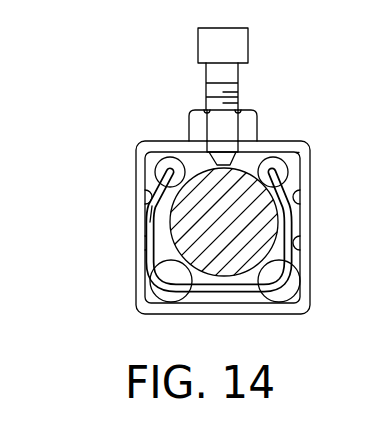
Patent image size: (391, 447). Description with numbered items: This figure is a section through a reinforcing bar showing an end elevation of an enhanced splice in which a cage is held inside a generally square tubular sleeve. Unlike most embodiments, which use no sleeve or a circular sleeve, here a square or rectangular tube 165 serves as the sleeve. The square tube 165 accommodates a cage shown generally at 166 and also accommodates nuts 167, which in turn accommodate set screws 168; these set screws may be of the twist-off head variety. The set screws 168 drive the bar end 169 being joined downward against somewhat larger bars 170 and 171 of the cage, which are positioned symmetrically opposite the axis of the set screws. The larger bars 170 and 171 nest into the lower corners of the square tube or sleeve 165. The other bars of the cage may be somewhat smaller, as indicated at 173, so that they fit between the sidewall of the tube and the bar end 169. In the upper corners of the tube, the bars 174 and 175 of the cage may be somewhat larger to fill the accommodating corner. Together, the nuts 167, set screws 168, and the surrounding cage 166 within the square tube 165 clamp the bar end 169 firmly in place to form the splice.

The square tube sleeve 165 is at (311, 192).
The cage 166 is at (295, 158).
The nuts 167 is at (257, 125).
The set screws 168 is at (238, 72).
The bar end 169 is at (188, 250).
The larger bar 170 is at (162, 287).
The larger bar 171 is at (285, 290).
The smaller bar 173 is at (162, 188).
The upper corner bar 174 is at (167, 165).
The upper corner bar 175 is at (288, 165).